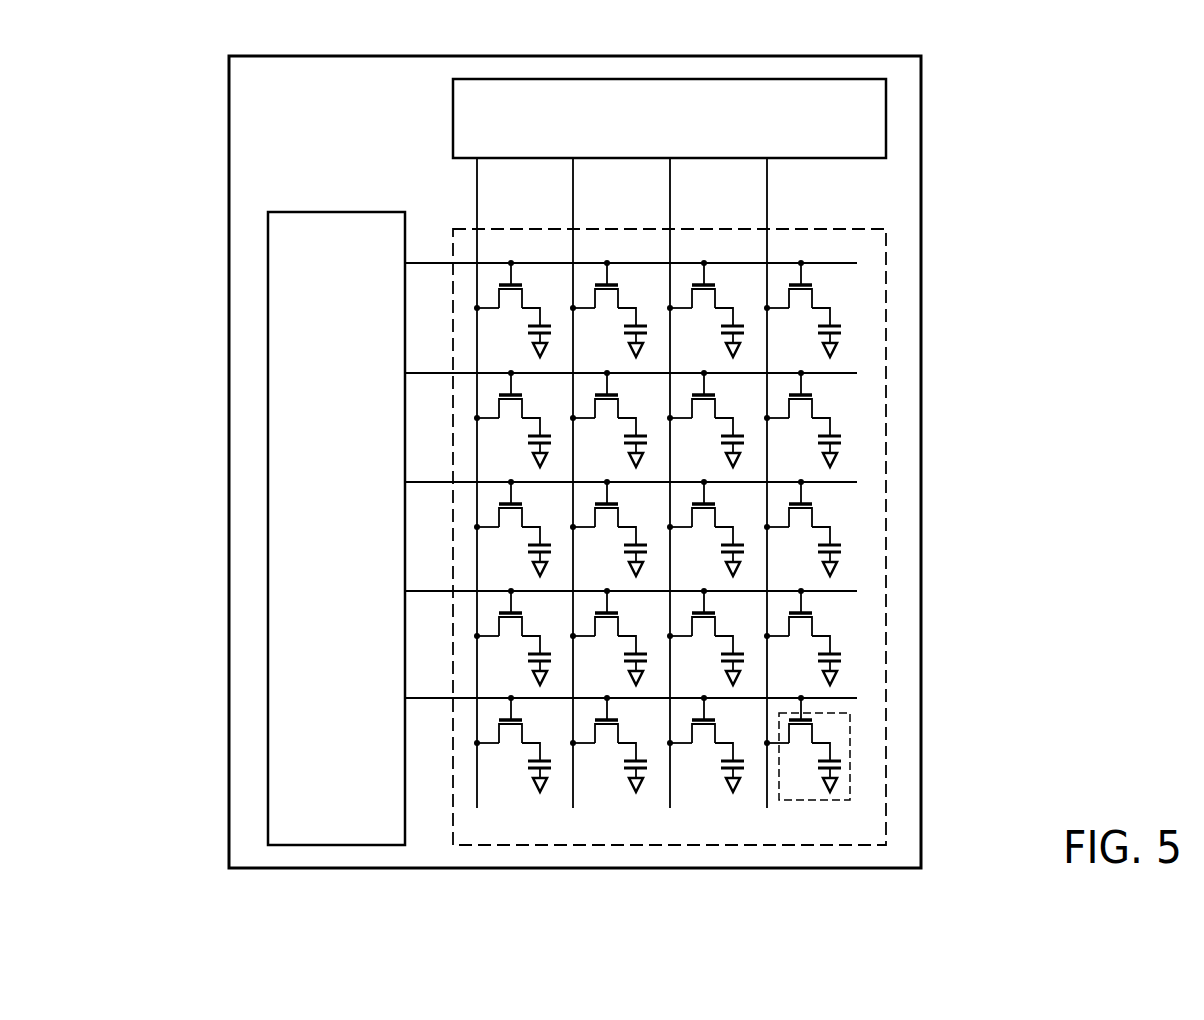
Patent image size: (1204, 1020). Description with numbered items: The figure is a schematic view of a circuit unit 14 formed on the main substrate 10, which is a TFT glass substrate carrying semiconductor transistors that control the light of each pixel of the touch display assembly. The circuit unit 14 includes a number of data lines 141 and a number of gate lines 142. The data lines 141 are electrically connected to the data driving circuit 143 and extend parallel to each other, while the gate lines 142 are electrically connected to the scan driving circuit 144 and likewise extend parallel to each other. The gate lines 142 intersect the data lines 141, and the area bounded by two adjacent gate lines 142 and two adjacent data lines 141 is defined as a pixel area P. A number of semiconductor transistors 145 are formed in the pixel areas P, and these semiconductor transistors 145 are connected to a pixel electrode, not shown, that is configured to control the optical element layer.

The main substrate 10 is at (226, 115).
The circuit unit 14 is at (384, 112).
The data lines 141 is at (671, 183).
The gate lines 142 is at (845, 372).
The data driving circuit 143 is at (886, 118).
The scan driving circuit 144 is at (337, 212).
The semiconductor transistors 145 is at (709, 341).
The pixel area P is at (820, 290).